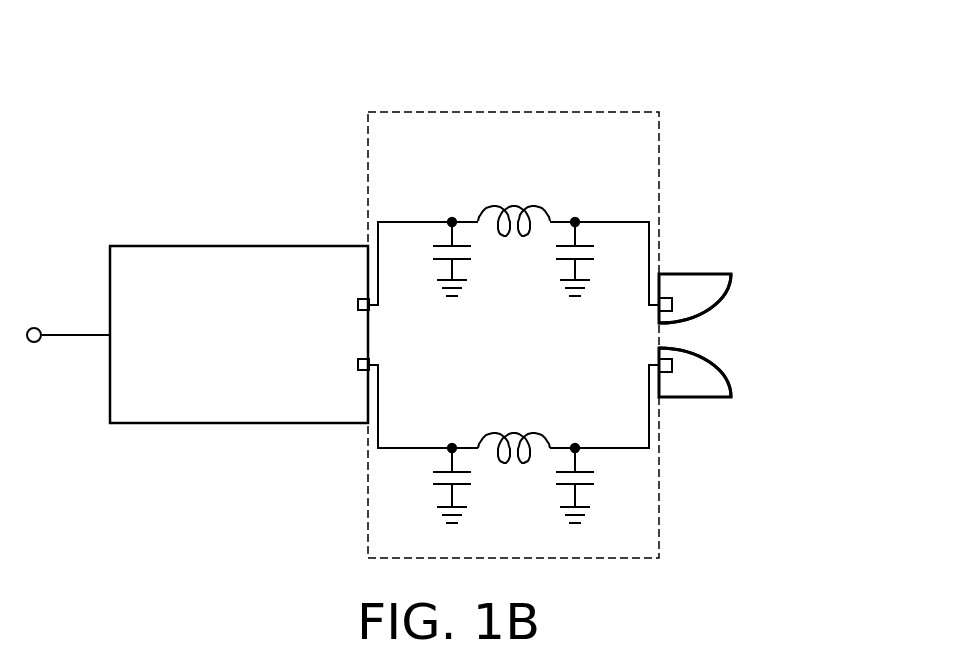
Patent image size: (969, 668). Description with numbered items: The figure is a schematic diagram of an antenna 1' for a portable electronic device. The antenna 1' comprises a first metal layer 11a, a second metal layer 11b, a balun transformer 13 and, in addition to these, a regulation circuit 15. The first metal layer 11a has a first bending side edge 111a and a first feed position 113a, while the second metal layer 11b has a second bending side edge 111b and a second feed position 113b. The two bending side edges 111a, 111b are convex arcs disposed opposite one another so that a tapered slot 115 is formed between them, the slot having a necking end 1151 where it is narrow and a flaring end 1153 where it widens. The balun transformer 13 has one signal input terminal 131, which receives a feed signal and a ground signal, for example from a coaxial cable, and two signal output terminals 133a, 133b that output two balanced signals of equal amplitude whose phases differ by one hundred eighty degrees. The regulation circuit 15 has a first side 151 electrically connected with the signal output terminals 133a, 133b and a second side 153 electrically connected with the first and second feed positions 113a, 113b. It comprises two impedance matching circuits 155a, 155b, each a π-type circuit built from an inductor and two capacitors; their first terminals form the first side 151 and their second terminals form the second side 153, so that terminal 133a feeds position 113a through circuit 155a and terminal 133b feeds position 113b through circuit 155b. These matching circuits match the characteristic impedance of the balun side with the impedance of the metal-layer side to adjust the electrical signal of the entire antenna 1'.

The antenna 1' is at (37, 53).
The first metal layer 11a is at (722, 278).
The second metal layer 11b is at (722, 395).
The first bending side edge 111a is at (725, 296).
The second bending side edge 111b is at (725, 378).
The first feed position 113a is at (670, 297).
The second feed position 113b is at (670, 373).
The tapered slot 115 is at (848, 302).
The necking end 1151 is at (679, 336).
The flaring end 1153 is at (728, 315).
The balun transformer 13 is at (227, 362).
The signal input terminal 131 is at (28, 327).
The signal output terminal 133a is at (358, 298).
The signal output terminal 133b is at (358, 372).
The regulation circuit 15 is at (470, 111).
The first side 151 is at (366, 153).
The second side 153 is at (661, 153).
The impedance matching circuit 155a is at (461, 198).
The impedance matching circuit 155b is at (461, 423).